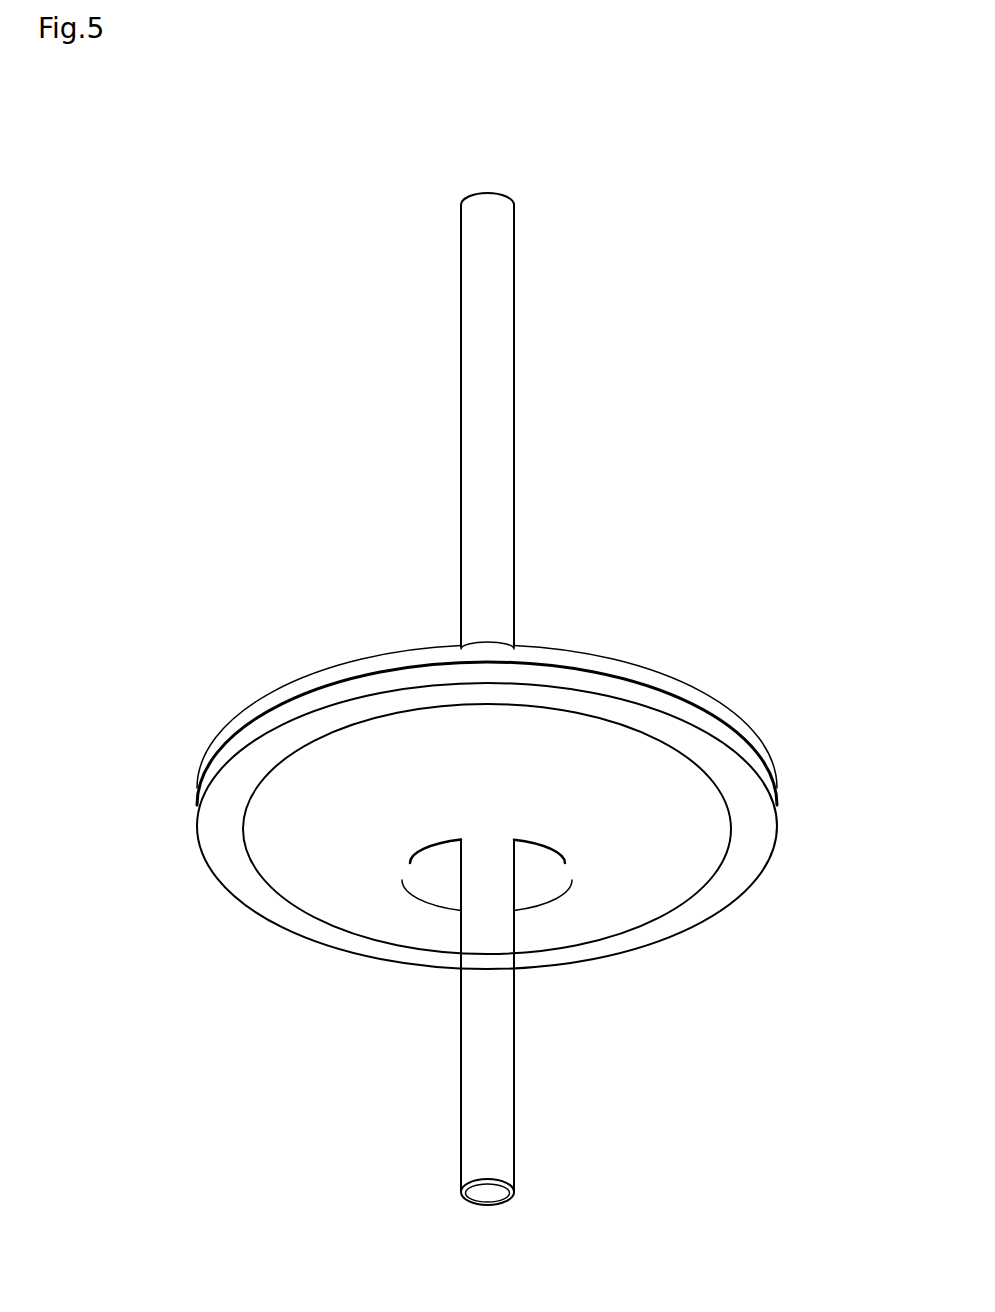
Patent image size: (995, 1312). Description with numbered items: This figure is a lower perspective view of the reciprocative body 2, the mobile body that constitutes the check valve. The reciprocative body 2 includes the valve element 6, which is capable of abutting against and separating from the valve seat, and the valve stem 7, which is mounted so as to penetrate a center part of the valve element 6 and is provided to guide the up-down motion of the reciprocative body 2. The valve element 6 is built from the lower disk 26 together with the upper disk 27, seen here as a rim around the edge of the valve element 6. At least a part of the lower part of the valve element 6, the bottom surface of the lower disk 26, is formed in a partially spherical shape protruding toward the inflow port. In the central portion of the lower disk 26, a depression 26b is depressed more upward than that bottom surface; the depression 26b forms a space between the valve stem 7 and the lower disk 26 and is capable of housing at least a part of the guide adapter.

The reciprocative body 2 is at (290, 281).
The valve element 6 is at (813, 679).
The valve stem 7 is at (514, 320).
The lower disk 26 is at (625, 910).
The depression 26b is at (533, 845).
The upper disk 27 is at (743, 725).